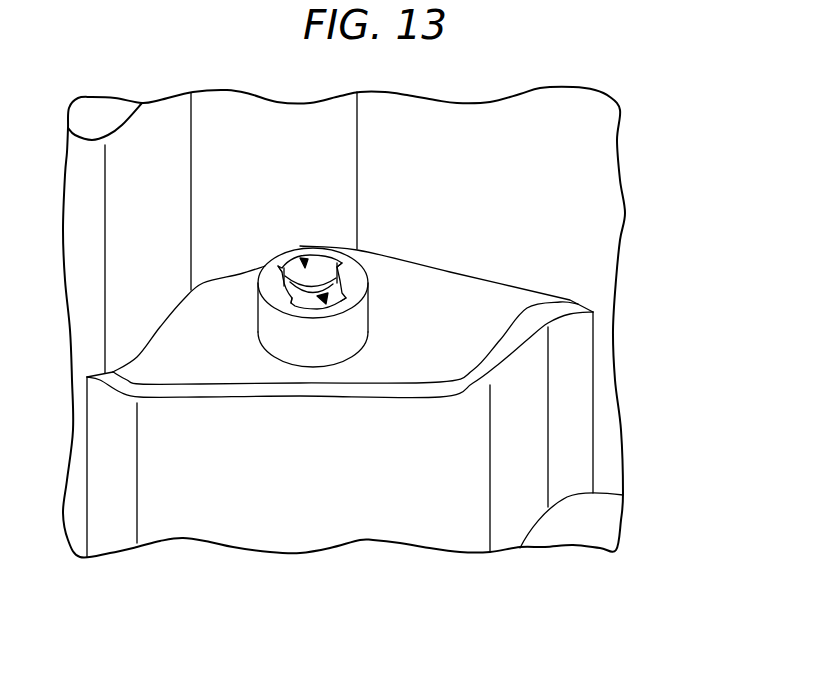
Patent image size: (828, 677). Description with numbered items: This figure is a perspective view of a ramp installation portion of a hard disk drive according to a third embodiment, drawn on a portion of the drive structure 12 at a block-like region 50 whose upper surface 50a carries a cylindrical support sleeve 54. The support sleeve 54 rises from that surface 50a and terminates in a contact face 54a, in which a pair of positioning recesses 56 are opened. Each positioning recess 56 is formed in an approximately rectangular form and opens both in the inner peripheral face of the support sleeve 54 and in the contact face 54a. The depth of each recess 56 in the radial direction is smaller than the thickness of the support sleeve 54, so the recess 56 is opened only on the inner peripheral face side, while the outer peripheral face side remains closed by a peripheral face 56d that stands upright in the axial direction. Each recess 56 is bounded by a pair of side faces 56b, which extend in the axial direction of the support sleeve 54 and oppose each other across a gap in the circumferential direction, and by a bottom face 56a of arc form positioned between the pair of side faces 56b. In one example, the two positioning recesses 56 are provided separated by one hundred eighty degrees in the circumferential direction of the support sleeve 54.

The case body 12 is at (155, 120).
The support block 50 is at (423, 527).
The top surface of support block 50a is at (477, 290).
The support sleeve 54 is at (270, 323).
The contact face 54a is at (272, 285).
The positioning recess 56 is at (305, 262).
The bottom face 56a is at (312, 286).
The side faces 56b is at (282, 258).
The peripheral face 56d is at (317, 266).